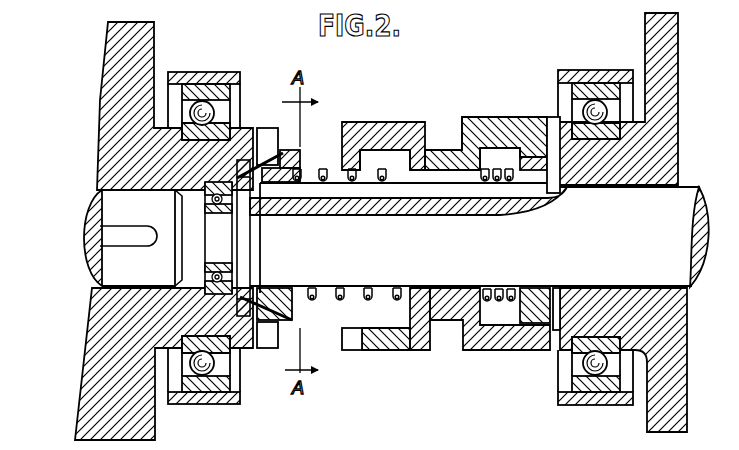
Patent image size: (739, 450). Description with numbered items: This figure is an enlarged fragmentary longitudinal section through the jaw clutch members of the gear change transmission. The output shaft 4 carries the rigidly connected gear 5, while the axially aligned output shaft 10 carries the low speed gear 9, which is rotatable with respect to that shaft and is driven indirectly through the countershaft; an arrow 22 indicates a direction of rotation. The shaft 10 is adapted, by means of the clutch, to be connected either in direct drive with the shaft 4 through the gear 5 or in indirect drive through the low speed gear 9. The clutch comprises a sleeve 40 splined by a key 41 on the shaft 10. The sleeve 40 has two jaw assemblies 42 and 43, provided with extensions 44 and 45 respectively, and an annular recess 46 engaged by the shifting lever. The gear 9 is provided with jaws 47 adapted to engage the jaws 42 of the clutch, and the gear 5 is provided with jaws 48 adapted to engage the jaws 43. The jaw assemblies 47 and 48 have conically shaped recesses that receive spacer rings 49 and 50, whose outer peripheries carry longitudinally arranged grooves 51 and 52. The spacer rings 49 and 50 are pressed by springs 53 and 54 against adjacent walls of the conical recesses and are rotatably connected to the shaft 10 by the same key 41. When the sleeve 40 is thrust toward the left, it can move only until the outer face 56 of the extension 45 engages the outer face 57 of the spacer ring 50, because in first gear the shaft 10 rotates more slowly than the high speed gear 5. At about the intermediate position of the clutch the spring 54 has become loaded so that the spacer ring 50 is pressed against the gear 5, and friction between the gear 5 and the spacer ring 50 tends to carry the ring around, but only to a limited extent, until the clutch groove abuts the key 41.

The output shaft 4 is at (95, 272).
The gear 5 is at (108, 147).
The low speed gear 9 is at (672, 144).
The output shaft 10 is at (636, 227).
The arrow 22 is at (120, 205).
The sleeve 40 is at (479, 122).
The key 41 is at (397, 188).
The jaw assembly 42 is at (533, 158).
The jaw assembly 43 is at (357, 132).
The extension 44 is at (550, 160).
The extension 45 is at (358, 160).
The annular recess 46 is at (444, 155).
The jaws 47 is at (545, 322).
The jaws 48 is at (274, 130).
The spacer ring 49 is at (537, 292).
The spacer ring 50 is at (291, 312).
The groove 51 is at (519, 159).
The groove 52 is at (283, 156).
The spring 53 is at (503, 178).
The spring 54 is at (344, 170).
The outer face 56 is at (342, 158).
The outer face 57 is at (293, 162).